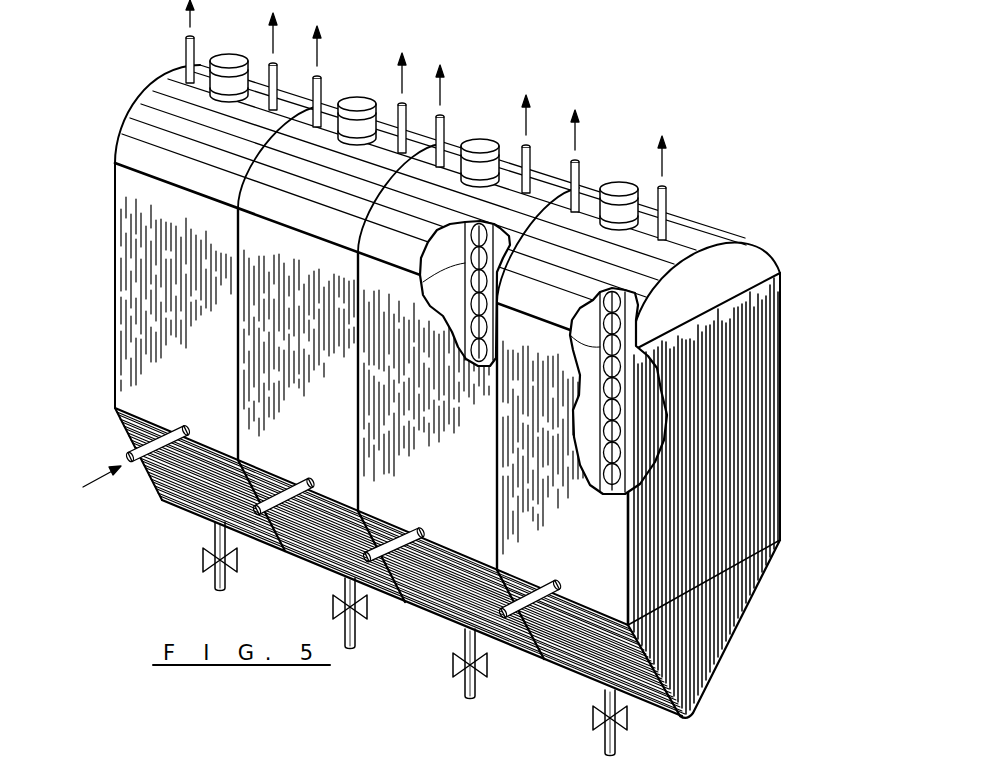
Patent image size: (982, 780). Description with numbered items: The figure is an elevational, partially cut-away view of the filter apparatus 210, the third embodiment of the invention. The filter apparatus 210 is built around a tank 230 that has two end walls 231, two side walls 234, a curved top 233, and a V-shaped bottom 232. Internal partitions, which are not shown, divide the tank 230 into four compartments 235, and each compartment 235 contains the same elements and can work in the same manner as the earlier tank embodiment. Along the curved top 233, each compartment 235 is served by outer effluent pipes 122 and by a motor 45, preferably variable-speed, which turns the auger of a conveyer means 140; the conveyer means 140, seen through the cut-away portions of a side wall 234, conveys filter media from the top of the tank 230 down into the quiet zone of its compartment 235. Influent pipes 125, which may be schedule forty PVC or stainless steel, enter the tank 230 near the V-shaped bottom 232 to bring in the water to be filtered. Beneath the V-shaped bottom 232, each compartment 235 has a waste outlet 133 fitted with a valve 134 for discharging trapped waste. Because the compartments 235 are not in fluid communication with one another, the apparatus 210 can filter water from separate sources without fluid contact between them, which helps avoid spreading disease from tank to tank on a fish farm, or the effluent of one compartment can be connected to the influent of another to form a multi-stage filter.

The filter apparatus 210 is at (107, 350).
The outer effluent pipes 122 is at (184, 62).
The motor 45 is at (232, 55).
The compartments 235 is at (133, 203).
The curved top 233 is at (697, 237).
The side walls 234 is at (135, 268).
The end walls 231 is at (763, 432).
The conveyer means 140 is at (428, 280).
The influent pipes 125 is at (133, 452).
The waste outlet 133 is at (203, 523).
The valve 134 is at (203, 560).
The V-shaped bottom 232 is at (592, 655).
The tank 230 is at (683, 712).